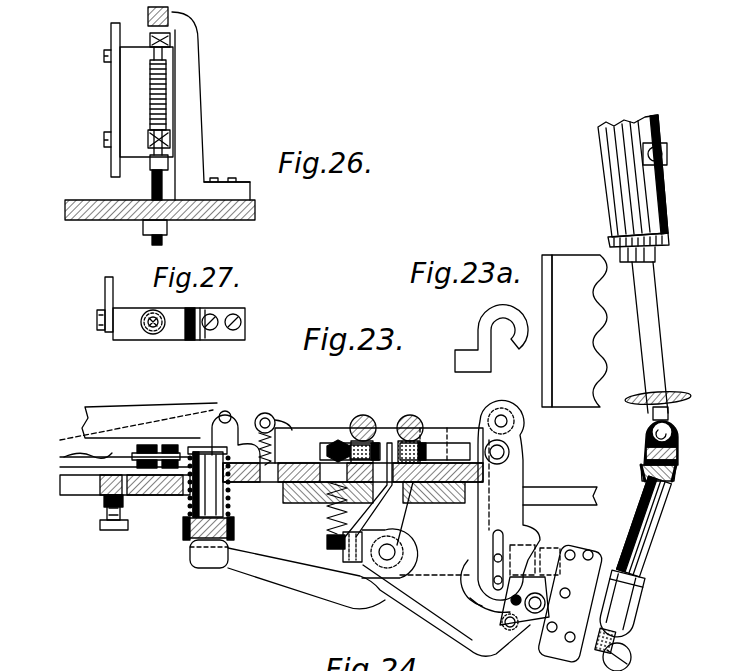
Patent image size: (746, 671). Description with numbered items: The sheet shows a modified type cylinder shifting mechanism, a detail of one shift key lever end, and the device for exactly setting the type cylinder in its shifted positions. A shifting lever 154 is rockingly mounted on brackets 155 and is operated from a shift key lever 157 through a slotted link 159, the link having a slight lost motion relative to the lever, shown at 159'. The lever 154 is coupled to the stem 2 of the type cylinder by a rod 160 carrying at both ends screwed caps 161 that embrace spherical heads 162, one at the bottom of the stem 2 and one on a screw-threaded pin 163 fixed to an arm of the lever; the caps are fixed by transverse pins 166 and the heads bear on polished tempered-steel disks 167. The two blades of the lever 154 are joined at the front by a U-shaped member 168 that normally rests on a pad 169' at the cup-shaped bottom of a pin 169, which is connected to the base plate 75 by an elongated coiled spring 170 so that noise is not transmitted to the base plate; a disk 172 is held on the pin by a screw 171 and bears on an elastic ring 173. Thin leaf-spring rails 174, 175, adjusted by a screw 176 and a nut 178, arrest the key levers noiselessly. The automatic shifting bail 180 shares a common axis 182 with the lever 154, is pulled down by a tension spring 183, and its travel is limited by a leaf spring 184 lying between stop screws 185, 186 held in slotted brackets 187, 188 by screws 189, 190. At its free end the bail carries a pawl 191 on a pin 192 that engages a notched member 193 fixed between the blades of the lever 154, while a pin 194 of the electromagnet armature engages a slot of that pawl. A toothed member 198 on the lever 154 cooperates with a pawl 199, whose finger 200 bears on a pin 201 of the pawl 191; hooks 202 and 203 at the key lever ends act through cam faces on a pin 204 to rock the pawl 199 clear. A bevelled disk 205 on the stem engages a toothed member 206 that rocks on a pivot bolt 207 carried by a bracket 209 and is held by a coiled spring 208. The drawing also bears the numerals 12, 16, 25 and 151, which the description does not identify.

In FIG. 23, the stem 2 is at (656, 315).
In FIG. 23, the handle 12 is at (669, 207).
In FIG. 23, the handle button 16 is at (667, 154).
In FIG. 23, the section line 25 is at (312, 523).
In FIG. 23, the base plate 75 is at (106, 500).
In FIG. 23, the bracket 151 is at (593, 640).
In FIG. 23, the shifting lever 154 is at (424, 542).
In FIG. 23, the brackets 155 is at (393, 513).
In FIG. 23, the shift key lever 157 is at (280, 420).
In FIG. 23, the slotted link 159 is at (468, 485).
In FIG. 23, the lost motion 159' is at (435, 587).
In FIG. 23, the rod 160 is at (645, 538).
In FIG. 23, the caps 161 is at (678, 456).
In FIG. 23, the spherical heads 162 is at (680, 432).
In FIG. 23, the screw-threaded pin 163 is at (616, 646).
In FIG. 23, the transverse pins 166 is at (658, 480).
In FIG. 23, the polished disks 167 is at (646, 442).
In FIG. 23, the U-shaped member 168 is at (208, 568).
In FIG. 23, the pin 169 is at (190, 533).
In FIG. 23, the pad 169' is at (189, 560).
In FIG. 23, the elongated thin member 170 is at (231, 512).
In FIG. 23, the screw 171 is at (205, 447).
In FIG. 23, the disk 172 is at (190, 447).
In FIG. 23, the ring 173 is at (226, 425).
In FIG. 23, the leaf-spring 174 is at (138, 435).
In FIG. 23, the leaf-spring 175 is at (271, 483).
In FIG. 23, the screw 176 is at (108, 524).
In FIG. 23, the nut 178 is at (122, 506).
In FIG. 23, the bail 180 is at (448, 620).
In FIG. 23, the common axis 182 is at (388, 558).
In FIG. 23, the tension spring 183 is at (330, 510).
In FIG. 23, the leaf spring 184 is at (390, 440).
In FIG. 23, the stop screw 185 is at (330, 443).
In FIG. 23, the stop screw 186 is at (430, 455).
In FIG. 23, the slotted bracket 187 is at (338, 440).
In FIG. 23, the slotted bracket 188 is at (425, 448).
In FIG. 23, the screw 189 is at (363, 415).
In FIG. 23, the screw 190 is at (418, 412).
In FIG. 23, the pawl 191 is at (524, 601).
In FIG. 23, the pin 192 is at (508, 631).
In FIG. 23, the notched member 193 is at (571, 598).
In FIG. 23, the pin 194 is at (500, 608).
In FIG. 23, the toothed member 198 is at (490, 568).
In FIG. 23, the pawl 199 is at (510, 516).
In FIG. 23, the finger 200 is at (551, 554).
In FIG. 23, the pin 201 is at (518, 560).
In FIG. 23, the hook 202 is at (523, 428).
In FIG. 23A, the hook 203 is at (484, 320).
In FIG. 23, the pin 204 is at (503, 415).
In FIG. 23, the disk 205 is at (682, 392).
In FIG. 26, the toothed member 206 is at (111, 100).
In FIG. 27, the toothed member 206 is at (108, 302).
In FIG. 23A, the toothed member 206 is at (574, 331).
In FIG. 26, the pivot bolt 207 is at (170, 30).
In FIG. 27, the pivot bolt 207 is at (150, 336).
In FIG. 26, the coiled spring 208 is at (165, 125).
In FIG. 27, the coiled spring 208 is at (168, 333).
In FIG. 26, the bracket 209 is at (197, 76).
In FIG. 27, the bracket 209 is at (207, 312).